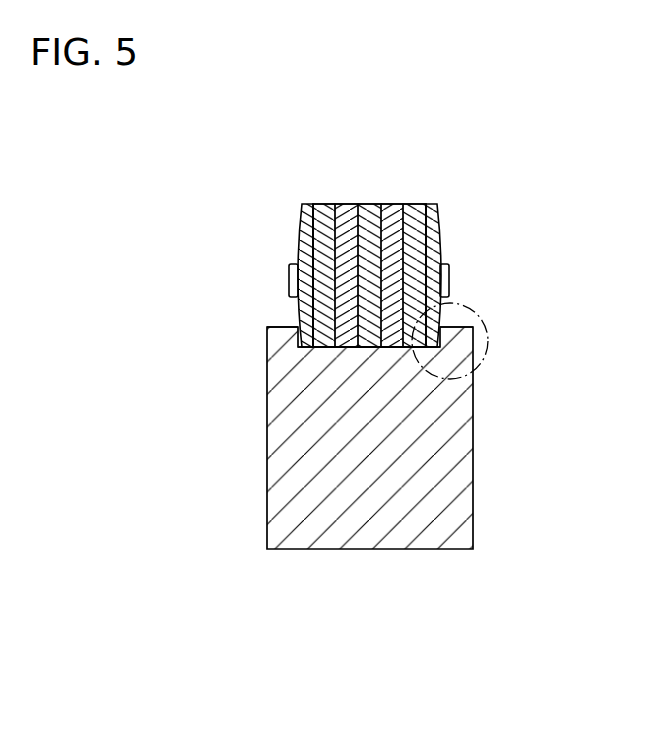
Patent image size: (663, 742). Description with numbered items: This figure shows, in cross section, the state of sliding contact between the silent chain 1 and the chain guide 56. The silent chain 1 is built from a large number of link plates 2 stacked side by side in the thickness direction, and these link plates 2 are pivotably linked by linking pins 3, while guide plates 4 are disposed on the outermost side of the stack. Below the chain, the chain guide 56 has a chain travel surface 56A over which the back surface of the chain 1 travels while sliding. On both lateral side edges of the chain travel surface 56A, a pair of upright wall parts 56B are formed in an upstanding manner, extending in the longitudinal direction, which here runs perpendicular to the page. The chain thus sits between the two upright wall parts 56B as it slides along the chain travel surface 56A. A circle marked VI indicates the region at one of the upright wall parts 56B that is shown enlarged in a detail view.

The silent chain 1 is at (375, 229).
The link plates 2 is at (368, 213).
The linking pins 3 is at (444, 265).
The guide plates 4 is at (298, 233).
The chain guide 56 is at (476, 464).
The chain travel surface 56A is at (352, 347).
The upright wall parts 56B is at (267, 328).
The detail view circle VI is at (476, 368).